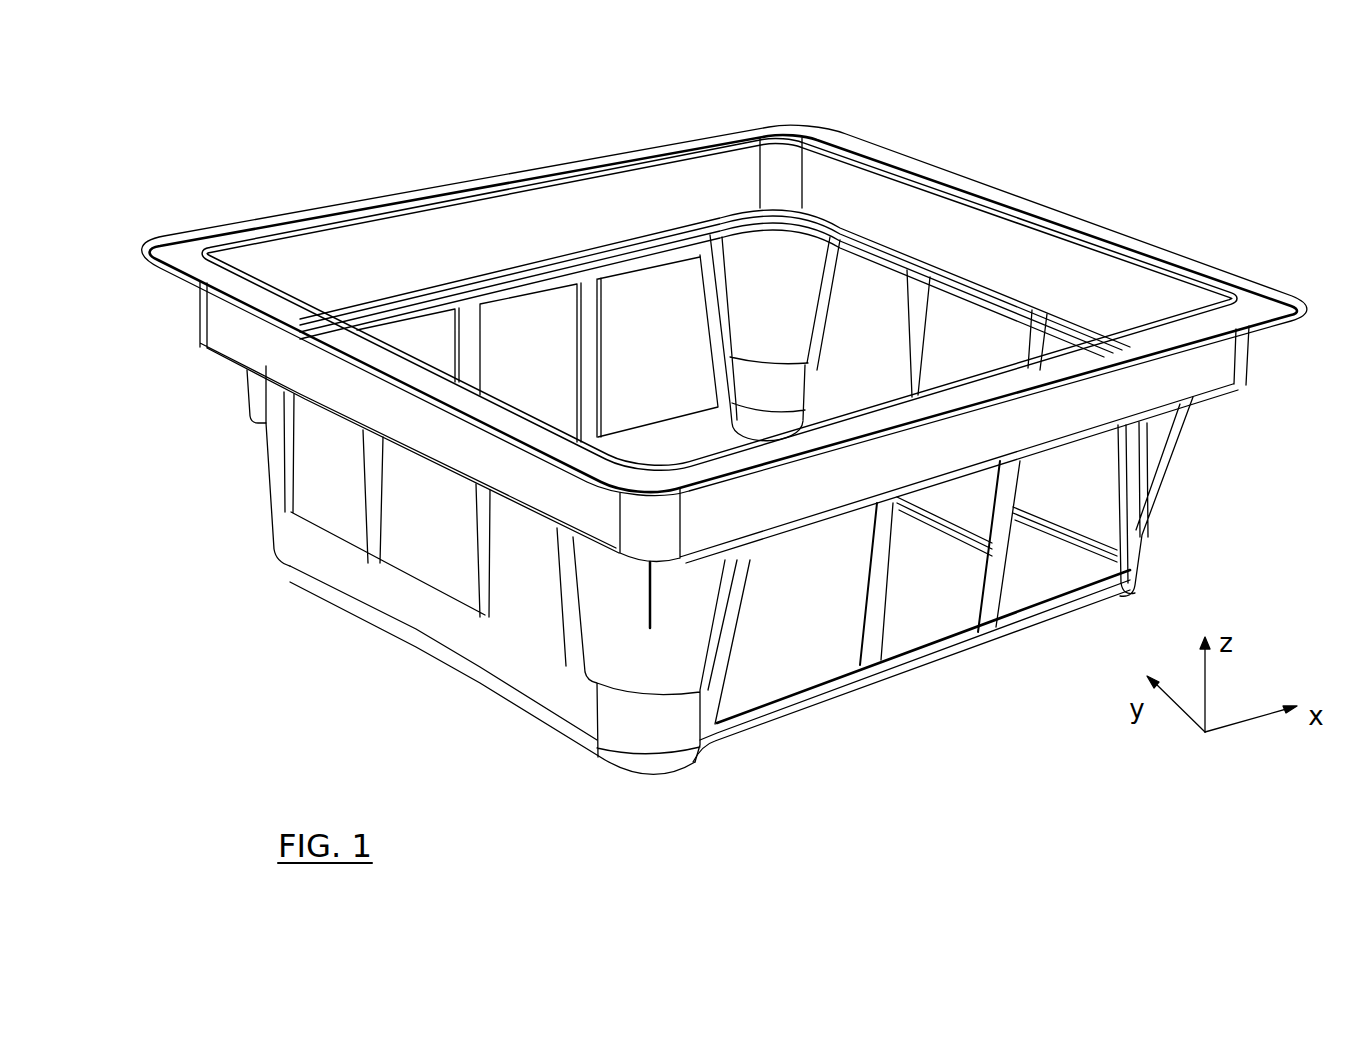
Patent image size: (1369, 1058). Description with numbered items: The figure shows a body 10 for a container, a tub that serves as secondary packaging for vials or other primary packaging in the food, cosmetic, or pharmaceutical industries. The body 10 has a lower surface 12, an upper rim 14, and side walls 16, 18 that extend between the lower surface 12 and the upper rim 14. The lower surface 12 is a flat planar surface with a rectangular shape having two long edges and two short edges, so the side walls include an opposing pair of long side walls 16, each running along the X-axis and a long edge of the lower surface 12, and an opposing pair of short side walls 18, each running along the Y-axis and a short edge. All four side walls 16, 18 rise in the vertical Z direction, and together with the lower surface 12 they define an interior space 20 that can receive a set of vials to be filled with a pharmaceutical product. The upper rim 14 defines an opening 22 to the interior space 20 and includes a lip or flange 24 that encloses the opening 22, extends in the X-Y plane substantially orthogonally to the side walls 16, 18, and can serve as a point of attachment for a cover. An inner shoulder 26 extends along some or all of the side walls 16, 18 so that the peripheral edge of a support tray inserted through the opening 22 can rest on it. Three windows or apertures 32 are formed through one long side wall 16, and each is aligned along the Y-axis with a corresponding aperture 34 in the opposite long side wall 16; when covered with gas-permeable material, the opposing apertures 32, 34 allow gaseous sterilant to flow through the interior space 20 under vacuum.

The body 10 is at (1052, 100).
The lower surface 12 is at (541, 725).
The upper rim 14 is at (349, 195).
The long side wall 16 is at (585, 215).
The short side wall 18 is at (485, 650).
The interior space 20 is at (790, 258).
The opening 22 is at (1077, 222).
The flange 24 is at (263, 228).
The inner shoulder 26 is at (465, 272).
The apertures 32 is at (1067, 557).
The apertures 34 is at (422, 363).